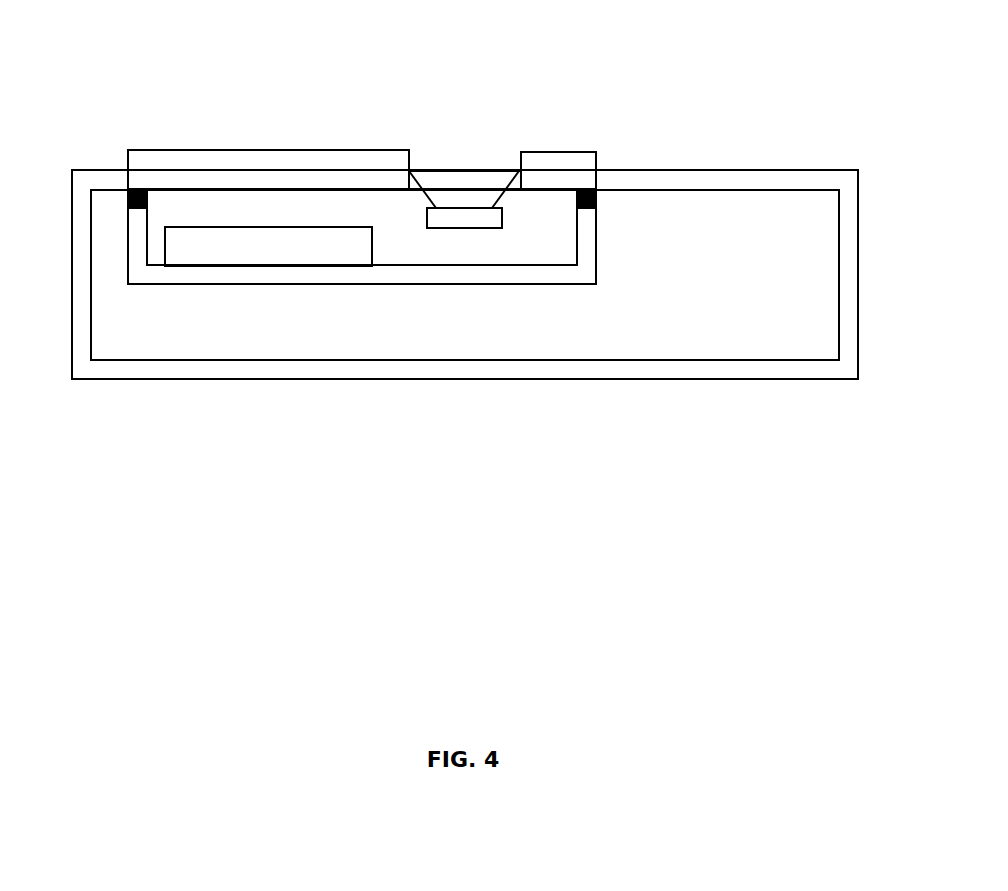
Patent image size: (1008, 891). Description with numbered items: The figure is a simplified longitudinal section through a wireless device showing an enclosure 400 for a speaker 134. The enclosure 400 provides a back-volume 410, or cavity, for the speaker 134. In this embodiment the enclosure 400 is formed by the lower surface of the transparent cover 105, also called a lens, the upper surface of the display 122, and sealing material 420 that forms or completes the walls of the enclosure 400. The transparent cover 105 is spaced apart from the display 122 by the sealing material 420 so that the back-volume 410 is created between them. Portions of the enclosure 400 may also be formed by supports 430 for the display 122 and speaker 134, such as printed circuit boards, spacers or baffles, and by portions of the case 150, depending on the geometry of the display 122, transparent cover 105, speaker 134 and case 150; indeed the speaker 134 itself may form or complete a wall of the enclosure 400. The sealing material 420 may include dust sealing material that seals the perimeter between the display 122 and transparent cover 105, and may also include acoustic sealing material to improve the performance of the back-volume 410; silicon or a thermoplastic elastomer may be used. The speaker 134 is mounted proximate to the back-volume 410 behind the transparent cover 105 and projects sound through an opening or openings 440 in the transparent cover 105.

The transparent cover 105 is at (297, 169).
The display 122 is at (222, 245).
The speaker 134 is at (464, 188).
The case 150 is at (747, 170).
The enclosure 400 is at (520, 246).
The back-volume 410 is at (315, 207).
The sealing material 420 is at (128, 190).
The supports 430 is at (259, 284).
The openings 440 is at (430, 152).